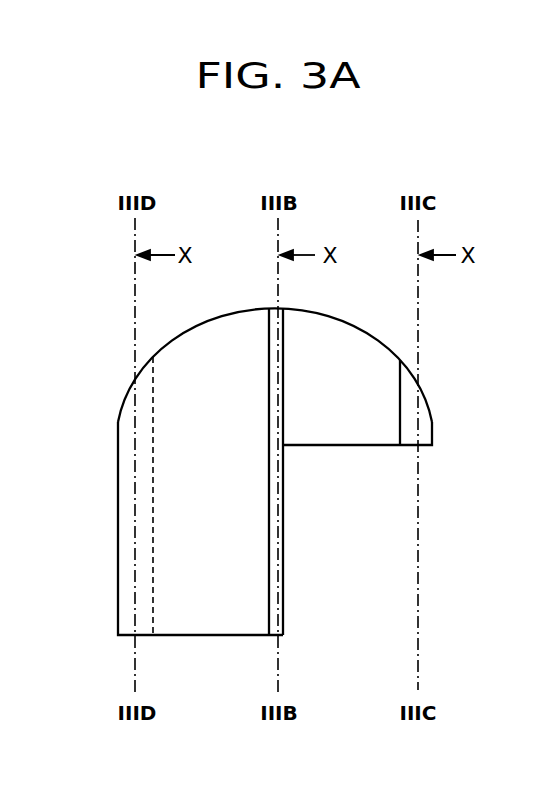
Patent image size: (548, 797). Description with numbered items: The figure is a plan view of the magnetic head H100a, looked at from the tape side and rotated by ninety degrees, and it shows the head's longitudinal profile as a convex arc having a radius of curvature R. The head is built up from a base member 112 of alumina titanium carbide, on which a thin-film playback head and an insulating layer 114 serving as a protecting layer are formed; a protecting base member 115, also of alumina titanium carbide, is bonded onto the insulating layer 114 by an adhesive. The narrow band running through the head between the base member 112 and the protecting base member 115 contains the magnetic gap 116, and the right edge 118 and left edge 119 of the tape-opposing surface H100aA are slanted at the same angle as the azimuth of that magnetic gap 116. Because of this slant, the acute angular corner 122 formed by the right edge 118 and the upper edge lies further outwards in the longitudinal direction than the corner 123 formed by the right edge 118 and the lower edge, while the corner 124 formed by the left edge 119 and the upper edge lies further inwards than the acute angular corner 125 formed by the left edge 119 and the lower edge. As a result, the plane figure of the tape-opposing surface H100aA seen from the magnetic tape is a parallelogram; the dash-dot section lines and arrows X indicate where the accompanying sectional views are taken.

The magnetic head H100a is at (352, 212).
The tape-opposing surface H100aA is at (342, 316).
The magnetic gap 116 is at (270, 307).
The corner 123 is at (400, 358).
The corner 124 is at (153, 357).
The radius of curvature R is at (174, 354).
The acute angular corner 125 is at (118, 426).
The left edge 119 is at (118, 463).
The acute angular corner 122 is at (432, 432).
The right edge 118 is at (432, 446).
The protecting base member 115 is at (340, 430).
The base member 112 is at (218, 577).
The insulating layer 114 is at (278, 616).